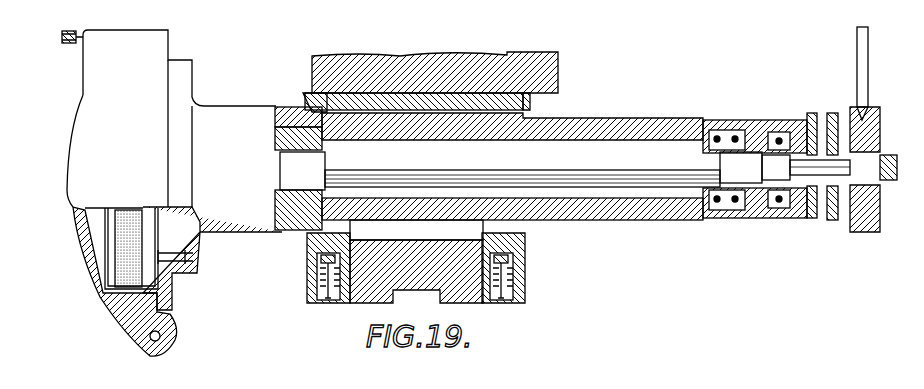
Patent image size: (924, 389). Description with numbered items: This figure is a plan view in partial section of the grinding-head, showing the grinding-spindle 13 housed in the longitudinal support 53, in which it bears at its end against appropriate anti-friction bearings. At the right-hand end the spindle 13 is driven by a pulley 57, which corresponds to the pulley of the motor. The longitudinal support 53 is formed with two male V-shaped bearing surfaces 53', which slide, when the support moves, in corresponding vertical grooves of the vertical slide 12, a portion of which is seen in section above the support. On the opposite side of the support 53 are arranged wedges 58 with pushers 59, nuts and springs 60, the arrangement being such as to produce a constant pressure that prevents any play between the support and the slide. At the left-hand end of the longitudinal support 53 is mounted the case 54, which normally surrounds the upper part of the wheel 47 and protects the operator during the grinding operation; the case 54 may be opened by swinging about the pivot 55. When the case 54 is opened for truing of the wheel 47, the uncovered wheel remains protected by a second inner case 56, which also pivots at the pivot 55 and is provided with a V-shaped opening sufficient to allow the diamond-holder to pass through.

The vertical slide 12 is at (558, 78).
The grinding-spindle 13 is at (611, 186).
The wheel 47 is at (130, 218).
The longitudinal support 53 is at (450, 170).
The male V-shaped bearing surface 53' is at (408, 98).
The case 54 is at (92, 277).
The pivot 55 is at (161, 336).
The inner case 56 is at (104, 244).
The pulley 57 is at (874, 206).
The wedges 58 is at (311, 244).
The pushers 59 is at (320, 268).
The springs 60 is at (326, 301).